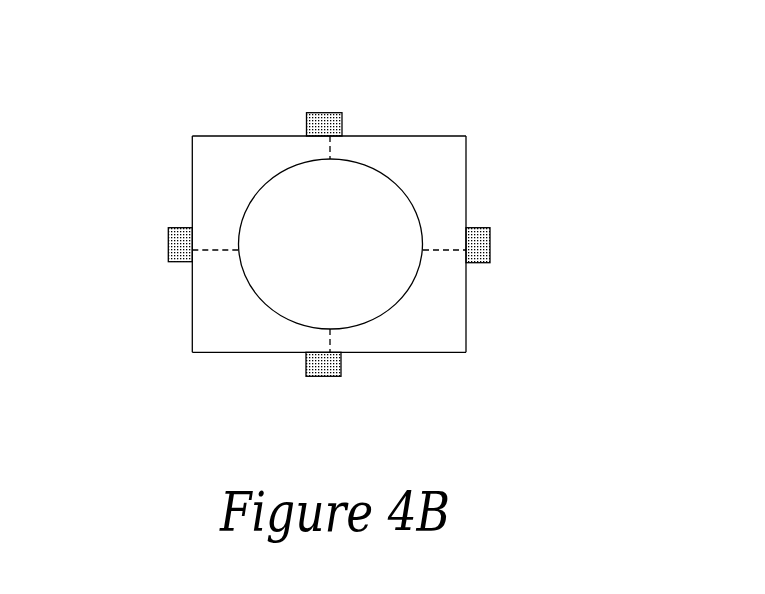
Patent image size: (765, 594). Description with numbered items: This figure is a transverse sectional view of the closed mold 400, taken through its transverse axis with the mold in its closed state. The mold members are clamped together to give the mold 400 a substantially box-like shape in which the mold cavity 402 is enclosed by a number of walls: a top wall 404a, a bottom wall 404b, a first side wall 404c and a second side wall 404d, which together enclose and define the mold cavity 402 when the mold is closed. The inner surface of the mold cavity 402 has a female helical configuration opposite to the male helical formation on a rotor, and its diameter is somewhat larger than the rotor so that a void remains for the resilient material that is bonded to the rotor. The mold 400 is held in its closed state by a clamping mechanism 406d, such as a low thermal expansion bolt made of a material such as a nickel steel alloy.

The closed mold 400 is at (327, 244).
The mold cavity 402 is at (331, 244).
The top wall 404a is at (272, 136).
The bottom wall 404b is at (304, 391).
The first side wall 404c is at (192, 193).
The second side wall 404d is at (466, 171).
The clamping mechanism 406d is at (88, 249).